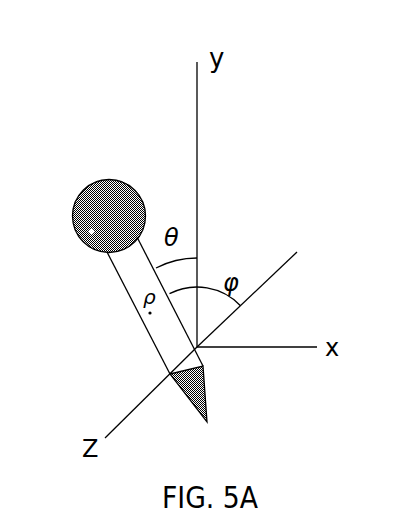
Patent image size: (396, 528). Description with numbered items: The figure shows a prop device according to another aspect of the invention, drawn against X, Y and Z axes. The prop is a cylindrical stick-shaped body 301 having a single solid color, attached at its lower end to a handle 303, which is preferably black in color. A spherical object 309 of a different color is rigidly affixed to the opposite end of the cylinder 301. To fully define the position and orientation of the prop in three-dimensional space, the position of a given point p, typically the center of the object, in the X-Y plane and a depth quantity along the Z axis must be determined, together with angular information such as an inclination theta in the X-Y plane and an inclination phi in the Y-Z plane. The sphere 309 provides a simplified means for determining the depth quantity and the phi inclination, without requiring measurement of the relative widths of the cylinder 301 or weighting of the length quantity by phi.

The cylindrical body 301 is at (129, 268).
The handle 303 is at (207, 411).
The spherical object 309 is at (117, 192).